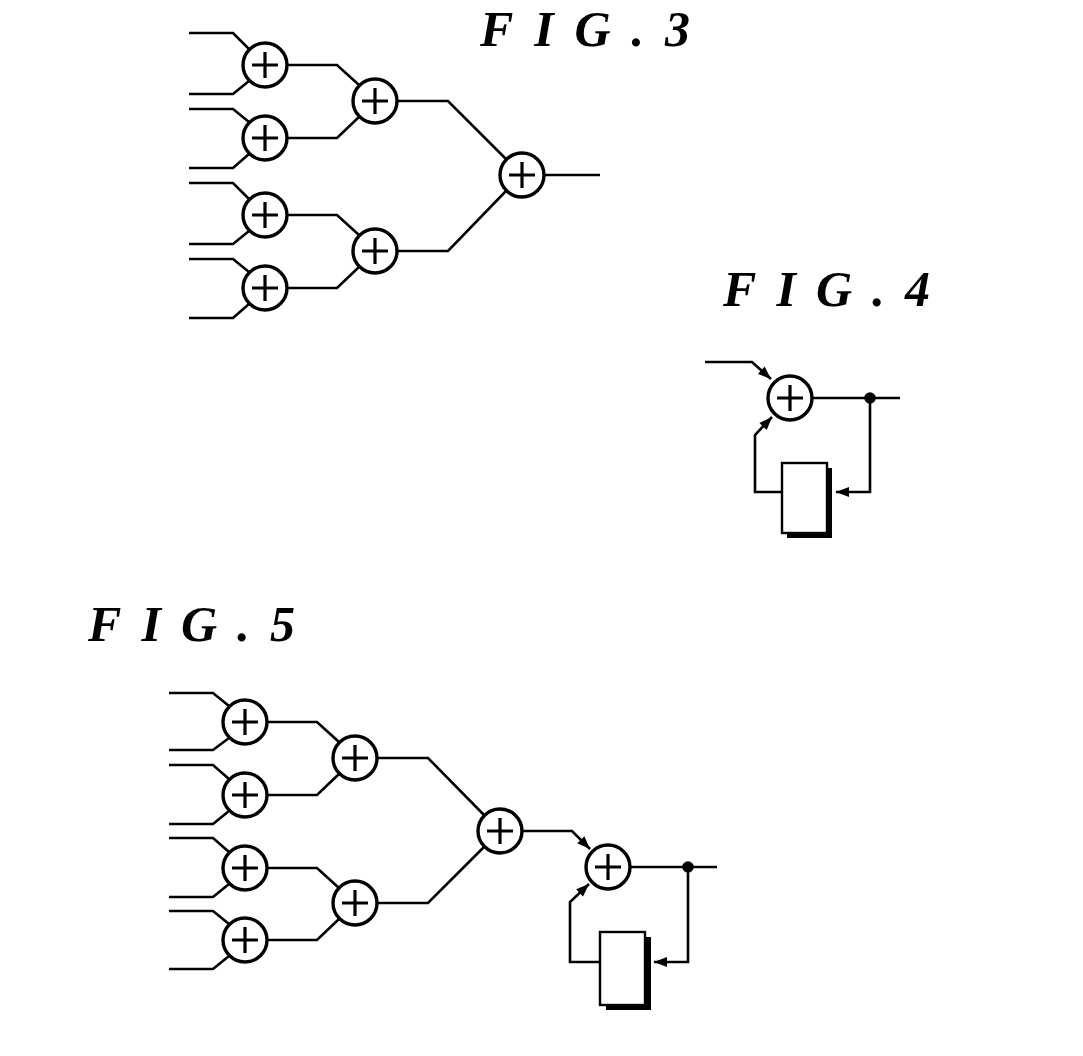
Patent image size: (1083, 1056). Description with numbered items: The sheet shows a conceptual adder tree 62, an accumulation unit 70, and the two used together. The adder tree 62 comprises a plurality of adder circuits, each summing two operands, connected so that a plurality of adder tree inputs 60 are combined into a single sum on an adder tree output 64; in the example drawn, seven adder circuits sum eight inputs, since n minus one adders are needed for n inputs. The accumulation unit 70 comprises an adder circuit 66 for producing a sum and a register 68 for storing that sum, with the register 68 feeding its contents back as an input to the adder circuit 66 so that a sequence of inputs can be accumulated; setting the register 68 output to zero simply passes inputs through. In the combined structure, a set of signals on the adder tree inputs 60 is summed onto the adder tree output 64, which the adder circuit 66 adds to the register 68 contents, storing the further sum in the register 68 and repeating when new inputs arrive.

In FIG. 3, the adder tree inputs 60 is at (147, 184).
In FIG. 5, the adder tree inputs 60 is at (147, 838).
In FIG. 3, the adder tree 62 is at (477, 254).
In FIG. 5, the adder tree 62 is at (336, 703).
In FIG. 3, the adder tree output 64 is at (573, 173).
In FIG. 5, the adder tree output 64 is at (551, 829).
In FIG. 4, the adder circuit 66 is at (803, 381).
In FIG. 5, the adder circuit 66 is at (624, 849).
In FIG. 4, the register 68 is at (811, 540).
In FIG. 5, the register 68 is at (627, 1010).
In FIG. 4, the accumulation unit 70 is at (729, 464).
In FIG. 5, the accumulation unit 70 is at (547, 933).